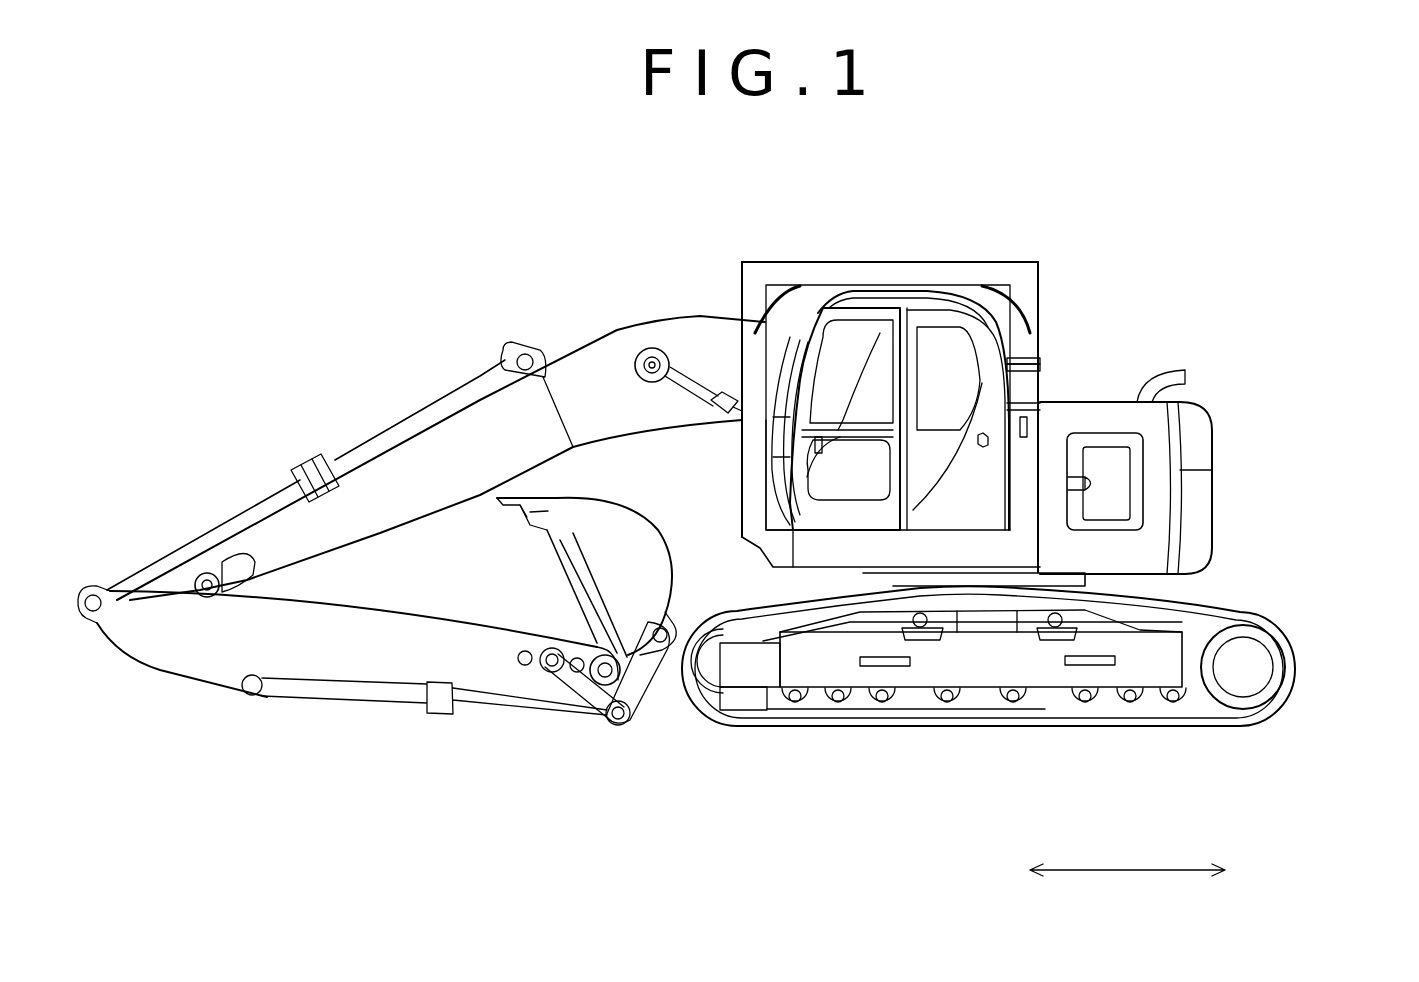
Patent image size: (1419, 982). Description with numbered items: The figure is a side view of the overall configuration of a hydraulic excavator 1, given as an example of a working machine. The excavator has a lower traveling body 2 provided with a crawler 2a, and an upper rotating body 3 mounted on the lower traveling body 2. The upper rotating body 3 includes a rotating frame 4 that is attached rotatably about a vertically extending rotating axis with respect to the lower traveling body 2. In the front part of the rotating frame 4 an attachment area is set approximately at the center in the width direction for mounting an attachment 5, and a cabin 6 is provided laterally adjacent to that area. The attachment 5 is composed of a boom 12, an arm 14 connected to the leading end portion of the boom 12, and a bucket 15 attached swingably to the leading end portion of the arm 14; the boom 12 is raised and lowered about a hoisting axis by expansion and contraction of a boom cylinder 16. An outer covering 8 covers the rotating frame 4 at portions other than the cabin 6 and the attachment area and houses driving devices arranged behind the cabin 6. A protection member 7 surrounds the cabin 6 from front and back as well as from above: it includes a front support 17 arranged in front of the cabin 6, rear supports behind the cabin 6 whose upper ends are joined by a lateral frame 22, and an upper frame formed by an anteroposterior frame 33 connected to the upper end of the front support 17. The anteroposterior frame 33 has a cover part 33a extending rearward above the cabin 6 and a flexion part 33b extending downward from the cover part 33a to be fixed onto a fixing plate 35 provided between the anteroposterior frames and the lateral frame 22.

The hydraulic excavator 1 is at (1378, 508).
The lower traveling body 2 is at (1308, 632).
The crawler 2a is at (1184, 727).
The upper rotating body 3 is at (1275, 524).
The rotating frame 4 is at (1007, 553).
The attachment 5 is at (333, 405).
The cabin 6 is at (860, 332).
The protection member 7 is at (762, 250).
The outer covering 8 is at (1192, 421).
The boom 12 is at (618, 415).
The arm 14 is at (460, 633).
The bucket 15 is at (640, 572).
The boom cylinder 16 is at (706, 385).
The front support 17 is at (750, 472).
The lateral frame 22 is at (1041, 368).
The anteroposterior frame 33 is at (1130, 206).
The cover part 33a is at (960, 265).
The flexion part 33b is at (1030, 337).
The fixing plate 35 is at (1041, 360).